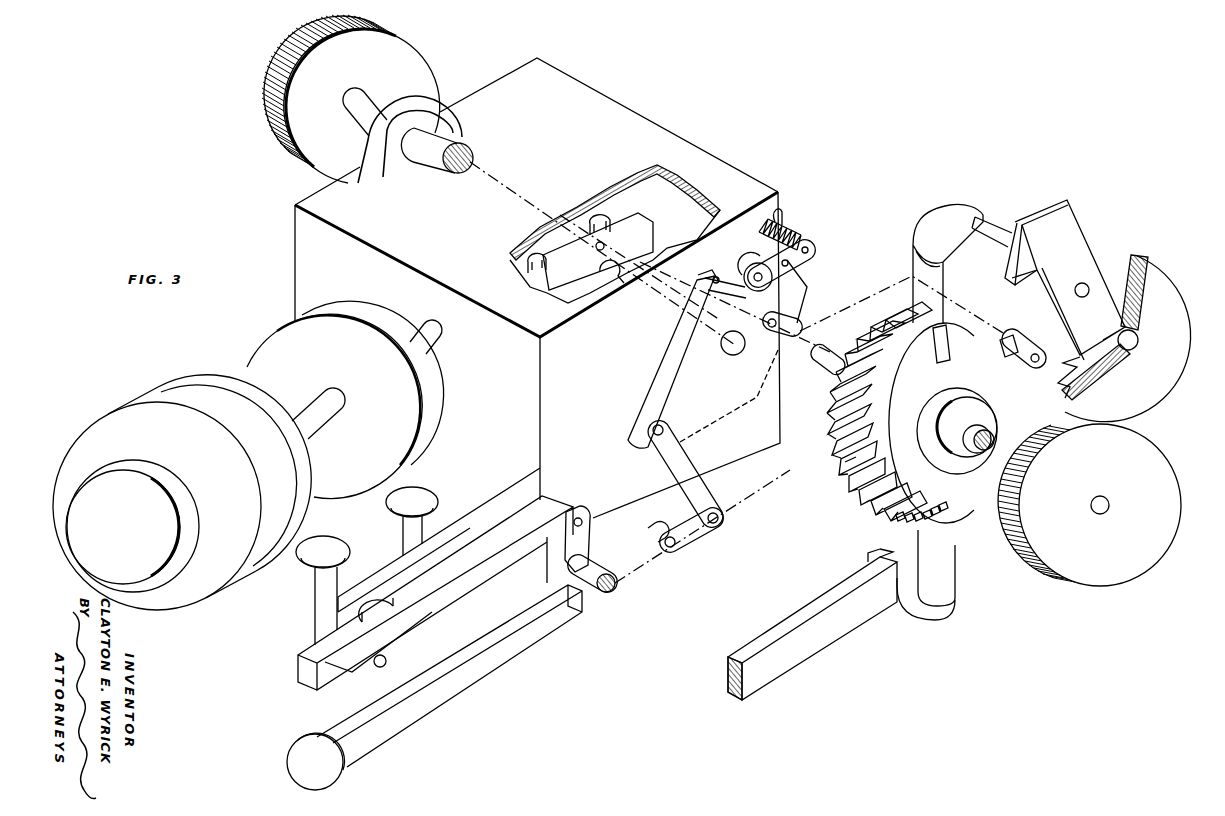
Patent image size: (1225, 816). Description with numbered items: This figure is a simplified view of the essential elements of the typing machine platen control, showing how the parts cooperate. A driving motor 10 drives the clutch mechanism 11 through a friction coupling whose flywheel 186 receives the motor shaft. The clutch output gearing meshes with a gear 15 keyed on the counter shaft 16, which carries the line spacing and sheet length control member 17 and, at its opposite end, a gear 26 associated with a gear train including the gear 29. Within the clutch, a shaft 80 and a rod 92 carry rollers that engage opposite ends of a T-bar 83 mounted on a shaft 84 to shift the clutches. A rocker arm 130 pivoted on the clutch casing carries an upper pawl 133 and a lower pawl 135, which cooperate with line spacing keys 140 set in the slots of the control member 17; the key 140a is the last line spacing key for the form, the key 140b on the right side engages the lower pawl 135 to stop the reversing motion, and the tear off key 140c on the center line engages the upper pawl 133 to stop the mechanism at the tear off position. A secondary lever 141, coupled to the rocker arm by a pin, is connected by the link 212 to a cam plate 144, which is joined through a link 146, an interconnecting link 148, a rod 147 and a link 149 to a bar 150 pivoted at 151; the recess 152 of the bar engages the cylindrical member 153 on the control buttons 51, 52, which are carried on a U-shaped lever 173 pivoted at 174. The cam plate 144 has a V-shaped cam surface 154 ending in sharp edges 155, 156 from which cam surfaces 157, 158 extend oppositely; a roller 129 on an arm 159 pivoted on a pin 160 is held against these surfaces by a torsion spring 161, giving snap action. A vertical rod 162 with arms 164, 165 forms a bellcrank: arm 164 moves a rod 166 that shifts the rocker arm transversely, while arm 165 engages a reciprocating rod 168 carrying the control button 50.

The driving motor 10 is at (284, 469).
The clutch mechanism 11 is at (402, 221).
The gear 15 is at (404, 56).
The counter shaft 16 is at (455, 146).
The line spacing and sheet length control member 17 is at (889, 478).
The gear 26 is at (1064, 570).
The gear 29 is at (1152, 265).
The control actuating button 50 is at (318, 761).
The control button 51 is at (323, 590).
The control button 52 is at (412, 521).
The shaft 80 is at (534, 256).
The T-bar 83 is at (645, 226).
The shaft 84 is at (608, 276).
The rod 92 is at (592, 222).
The roller 129 is at (760, 260).
The rocker arm 130 is at (1075, 221).
The pawl 133 is at (1012, 281).
The pawl 135 is at (1072, 372).
The line spacing keys 140 is at (910, 325).
The last line spacing key 140a is at (868, 506).
The key 140b is at (946, 345).
The tear off key 140c is at (846, 467).
The secondary lever 141 is at (1048, 336).
The cam plate 144 is at (744, 402).
The link 146 is at (698, 538).
The rod 147 is at (598, 590).
The interconnecting link 148 is at (680, 455).
The link 149 is at (587, 531).
The bar 150 is at (501, 569).
The pivot 151 is at (583, 519).
The recess 152 is at (386, 603).
The cylindrical member 153 is at (376, 602).
The cam surface 154 is at (726, 289).
The sharp edge 155 is at (715, 277).
The sharp edge 156 is at (790, 279).
The cam surface 157 is at (707, 274).
The cam surface 158 is at (808, 285).
The arm 159 is at (768, 283).
The pin 160 is at (808, 247).
The torsion spring 161 is at (790, 229).
The rod 162 is at (948, 561).
The arm 164 is at (946, 219).
The arm 165 is at (893, 556).
The rod 166 is at (995, 231).
The reciprocating rod 168 is at (842, 623).
The U-shaped lever 173 is at (318, 620).
The pivot 174 is at (386, 662).
The flywheel 186 is at (400, 418).
The link 212 is at (796, 324).